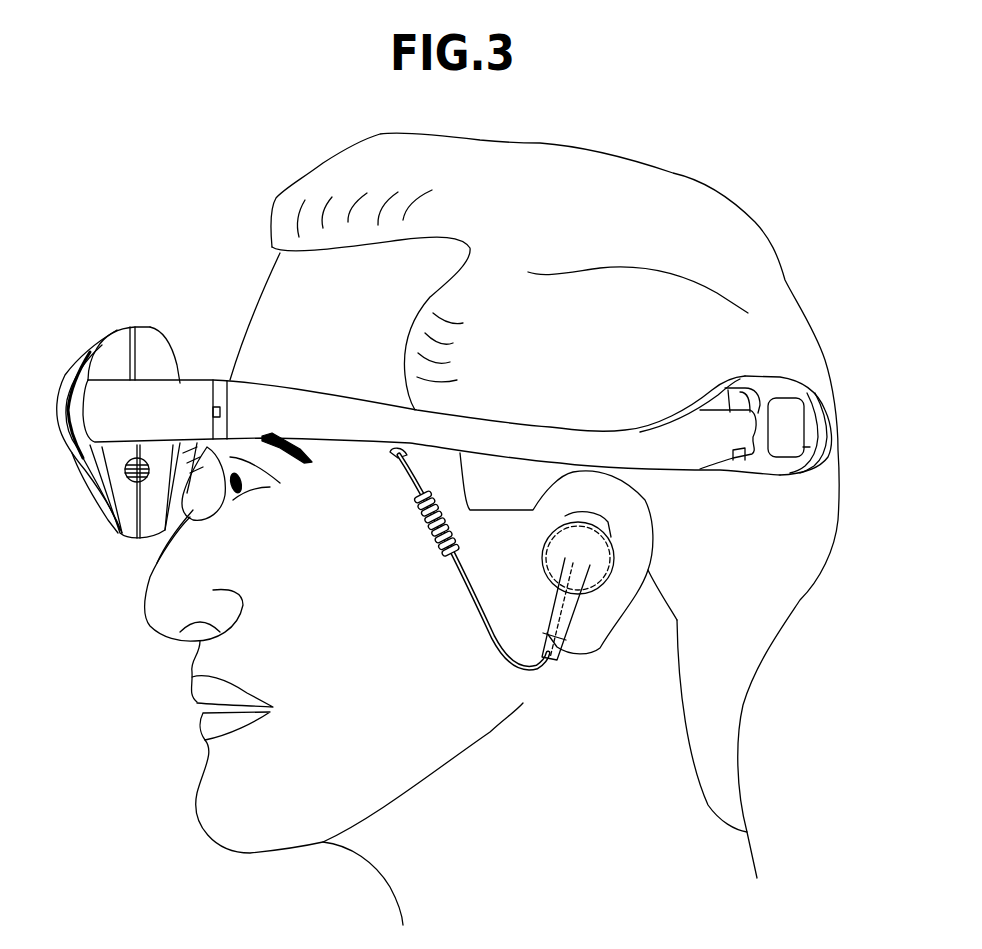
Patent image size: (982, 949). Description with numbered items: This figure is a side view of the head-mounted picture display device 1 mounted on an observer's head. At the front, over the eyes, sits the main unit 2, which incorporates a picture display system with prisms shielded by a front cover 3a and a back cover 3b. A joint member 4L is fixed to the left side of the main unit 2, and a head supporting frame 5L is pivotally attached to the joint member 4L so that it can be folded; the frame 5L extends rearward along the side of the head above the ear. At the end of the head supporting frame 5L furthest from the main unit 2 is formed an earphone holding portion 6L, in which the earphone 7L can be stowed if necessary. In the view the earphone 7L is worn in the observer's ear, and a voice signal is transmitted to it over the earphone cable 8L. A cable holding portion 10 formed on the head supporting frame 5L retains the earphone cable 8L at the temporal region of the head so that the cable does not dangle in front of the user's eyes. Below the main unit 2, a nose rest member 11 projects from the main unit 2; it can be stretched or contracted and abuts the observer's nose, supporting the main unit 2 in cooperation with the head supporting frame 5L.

The head-mounted picture display device 1 is at (77, 336).
The main unit 2 is at (109, 544).
The front cover 3a is at (120, 343).
The back cover 3b is at (153, 347).
The joint member 4L is at (120, 417).
The head supporting frame 5L is at (342, 420).
The earphone holding portion 6L is at (827, 440).
The earphone 7L is at (598, 577).
The earphone cable 8L is at (473, 603).
The cable holding portion 10 is at (397, 460).
The nose rest member 11 is at (197, 493).